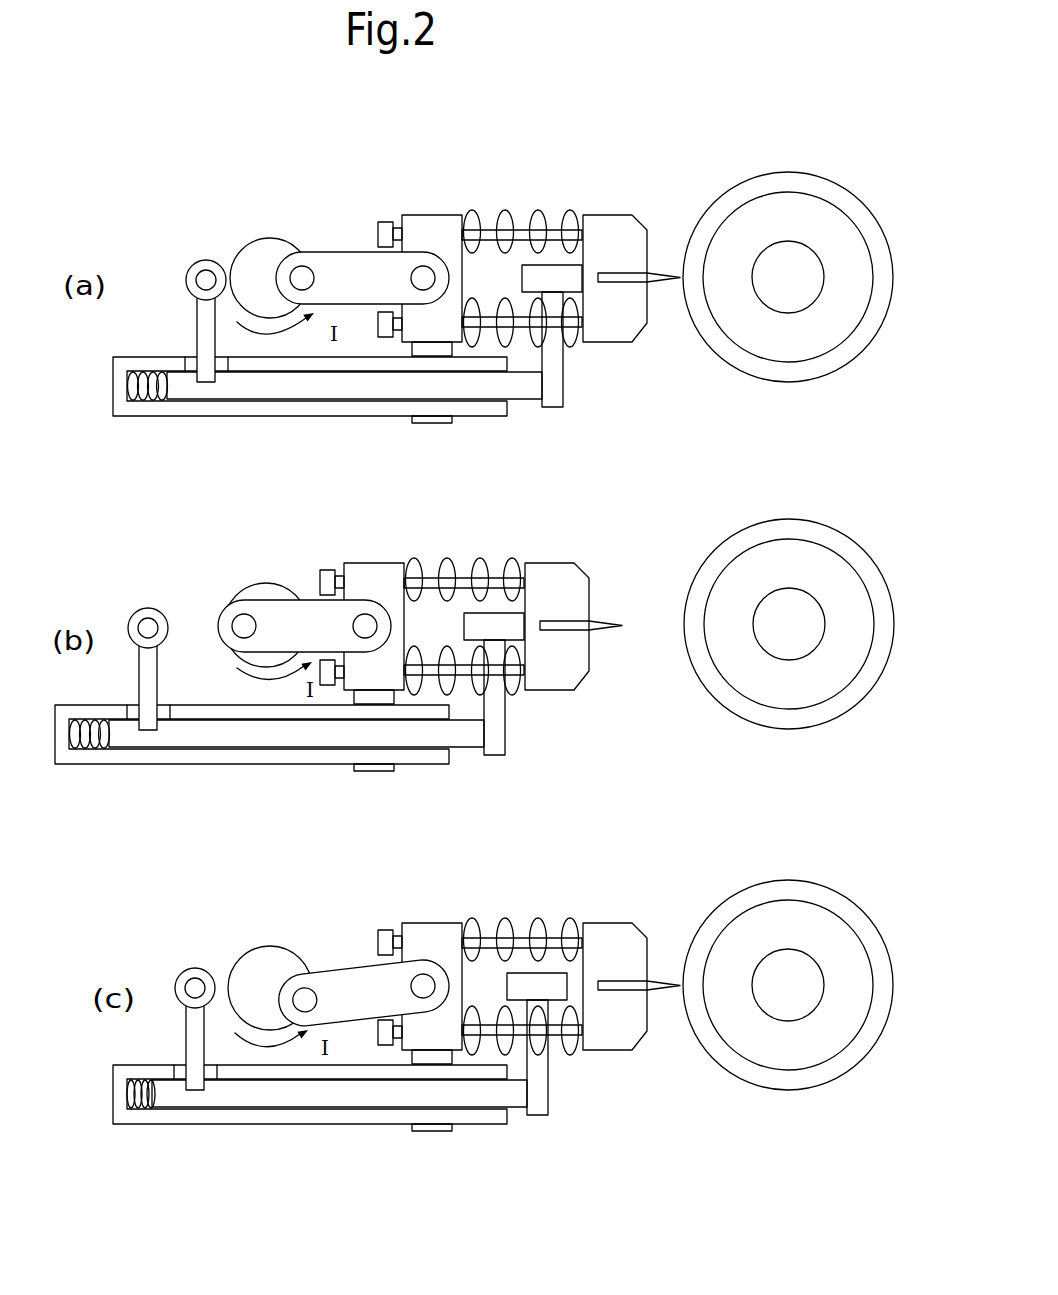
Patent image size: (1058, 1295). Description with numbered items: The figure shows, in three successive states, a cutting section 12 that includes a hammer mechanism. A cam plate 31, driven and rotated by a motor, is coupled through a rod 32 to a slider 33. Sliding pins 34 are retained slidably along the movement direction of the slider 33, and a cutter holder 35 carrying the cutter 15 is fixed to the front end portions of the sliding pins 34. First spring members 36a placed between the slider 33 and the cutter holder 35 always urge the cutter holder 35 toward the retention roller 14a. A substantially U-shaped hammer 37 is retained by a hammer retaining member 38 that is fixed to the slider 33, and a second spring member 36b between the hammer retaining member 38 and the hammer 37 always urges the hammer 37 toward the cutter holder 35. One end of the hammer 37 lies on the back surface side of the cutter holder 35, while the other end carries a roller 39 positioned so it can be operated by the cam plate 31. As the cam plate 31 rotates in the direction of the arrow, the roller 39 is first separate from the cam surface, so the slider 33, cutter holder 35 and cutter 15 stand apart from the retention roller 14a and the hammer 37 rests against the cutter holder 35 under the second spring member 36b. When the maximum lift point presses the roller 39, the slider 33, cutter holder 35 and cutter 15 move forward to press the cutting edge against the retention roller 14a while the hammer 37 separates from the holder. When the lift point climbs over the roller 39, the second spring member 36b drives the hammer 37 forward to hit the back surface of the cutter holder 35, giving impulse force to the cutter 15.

The cutting section 12 is at (316, 212).
The retention roller 14a is at (810, 172).
The cutter 15 is at (672, 272).
The cam plate 31 is at (268, 238).
The rod 32 is at (362, 253).
The slider 33 is at (450, 216).
The sliding pins 34 is at (518, 232).
The cutter holder 35 is at (613, 217).
The first spring members 36a is at (537, 219).
The second spring member 36b is at (145, 392).
The hammer 37 is at (312, 389).
The hammer retaining member 38 is at (239, 415).
The roller 39 is at (200, 261).